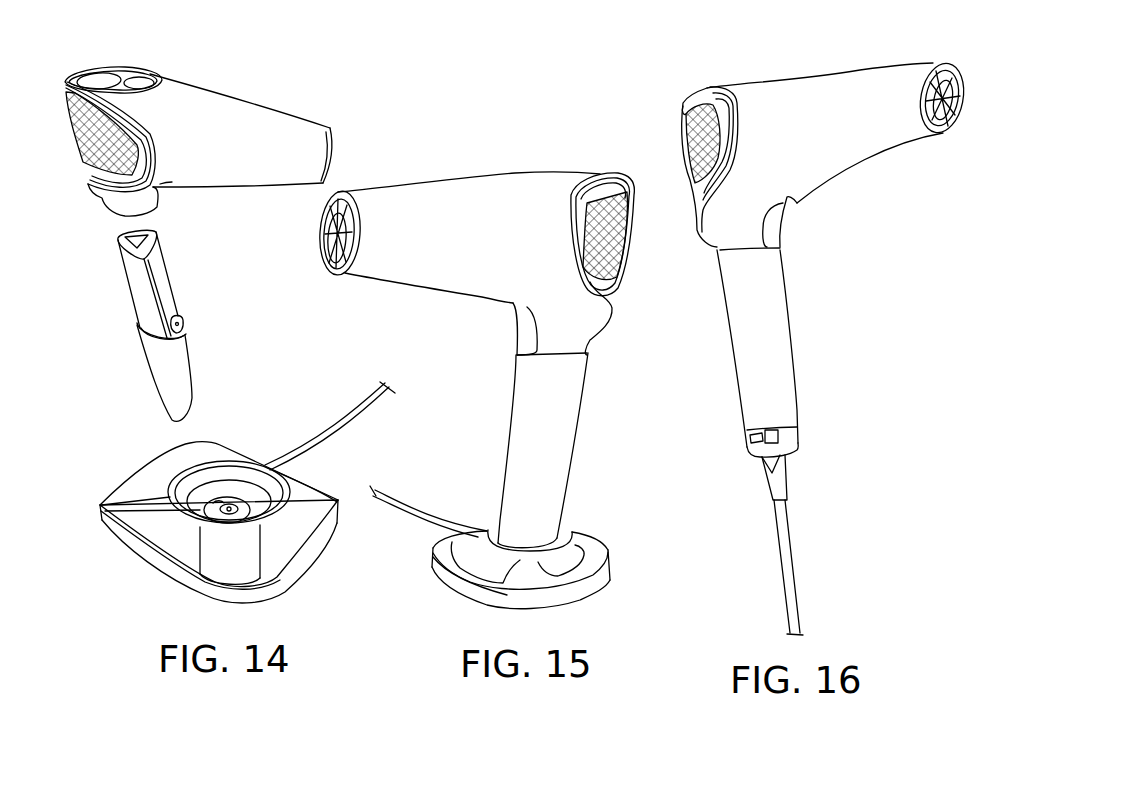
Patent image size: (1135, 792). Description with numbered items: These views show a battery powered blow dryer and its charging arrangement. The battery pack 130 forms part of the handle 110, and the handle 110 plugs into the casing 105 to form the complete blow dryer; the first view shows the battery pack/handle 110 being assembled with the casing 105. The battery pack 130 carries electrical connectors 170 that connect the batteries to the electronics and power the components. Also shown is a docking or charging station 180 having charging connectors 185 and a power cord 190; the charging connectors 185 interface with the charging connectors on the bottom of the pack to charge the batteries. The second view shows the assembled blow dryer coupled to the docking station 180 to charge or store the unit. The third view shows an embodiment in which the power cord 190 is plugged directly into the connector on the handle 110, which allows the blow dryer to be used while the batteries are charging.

In FIG. 14, the casing 105 is at (187, 96).
In FIG. 15, the casing 105 is at (510, 173).
In FIG. 16, the casing 105 is at (780, 77).
In FIG. 14, the handle 110 is at (187, 367).
In FIG. 15, the handle 110 is at (572, 476).
In FIG. 16, the handle 110 is at (735, 372).
In FIG. 14, the battery pack 130 is at (128, 290).
In FIG. 14, the electrical connectors 170 is at (178, 322).
In FIG. 14, the docking or charging station 180 is at (300, 577).
In FIG. 15, the docking or charging station 180 is at (602, 584).
In FIG. 14, the charging connectors 185 is at (228, 498).
In FIG. 14, the power cord 190 is at (355, 430).
In FIG. 16, the power cord 190 is at (792, 545).